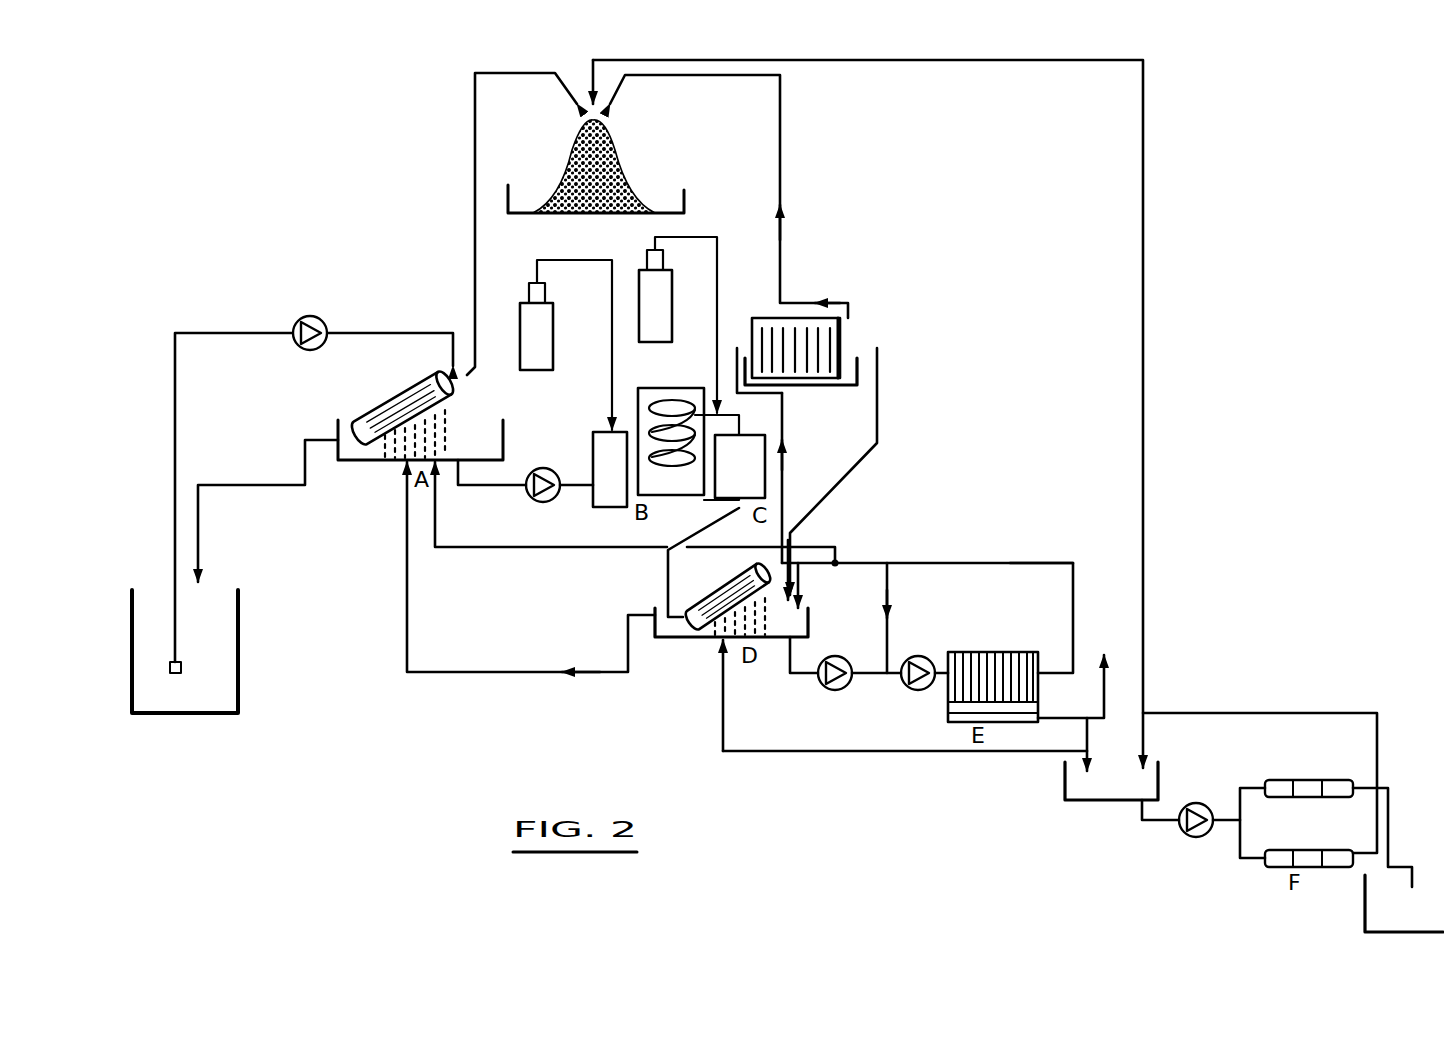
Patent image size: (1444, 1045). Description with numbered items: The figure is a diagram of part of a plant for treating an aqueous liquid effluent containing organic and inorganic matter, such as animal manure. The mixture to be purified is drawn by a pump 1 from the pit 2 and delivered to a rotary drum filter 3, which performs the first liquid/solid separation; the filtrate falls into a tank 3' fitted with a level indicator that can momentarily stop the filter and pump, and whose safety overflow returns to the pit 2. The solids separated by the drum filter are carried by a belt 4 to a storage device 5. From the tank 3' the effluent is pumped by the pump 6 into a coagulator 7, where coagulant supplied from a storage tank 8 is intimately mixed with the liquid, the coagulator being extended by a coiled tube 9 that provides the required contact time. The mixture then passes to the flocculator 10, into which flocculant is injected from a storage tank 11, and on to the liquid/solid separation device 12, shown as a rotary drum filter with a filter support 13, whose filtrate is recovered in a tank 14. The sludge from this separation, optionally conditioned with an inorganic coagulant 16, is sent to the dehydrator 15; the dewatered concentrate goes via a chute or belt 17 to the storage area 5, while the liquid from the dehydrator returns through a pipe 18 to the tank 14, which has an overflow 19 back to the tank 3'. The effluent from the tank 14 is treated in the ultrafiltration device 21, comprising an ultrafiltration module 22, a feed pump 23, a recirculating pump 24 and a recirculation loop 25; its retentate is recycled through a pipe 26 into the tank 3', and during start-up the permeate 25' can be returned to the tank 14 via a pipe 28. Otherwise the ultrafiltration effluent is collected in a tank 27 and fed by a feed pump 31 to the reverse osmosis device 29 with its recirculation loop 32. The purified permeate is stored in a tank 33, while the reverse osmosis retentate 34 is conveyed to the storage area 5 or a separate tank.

The pump 1 is at (312, 316).
The pit 2 is at (197, 687).
The rotary drum filter 3 is at (400, 413).
The tank 3' is at (436, 437).
The belt 4 is at (475, 178).
The storage device 5 is at (665, 210).
The pump 6 is at (543, 503).
The coagulator 7 is at (607, 507).
The storage tank 8 is at (546, 355).
The coiled tube 9 is at (660, 466).
The flocculator 10 is at (755, 473).
The storage tank 11 is at (662, 318).
The liquid/solid separation device 12 is at (696, 342).
The filter support 13 is at (698, 636).
The tank 14 is at (770, 667).
The dehydrator 15 is at (842, 332).
The inorganic coagulant 16 is at (786, 422).
The chute or belt 17 is at (782, 150).
The pipe 18 is at (847, 480).
The overflow 19 is at (527, 672).
The ultrafiltration device 21 is at (923, 550).
The ultrafiltration module 22 is at (982, 663).
The feed pump 23 is at (836, 656).
The recirculating pump 24 is at (918, 656).
The recirculation loop 25 is at (1041, 532).
The effluent (permeate) 25' is at (1071, 713).
The pipe 26 is at (470, 547).
The tank 27 is at (1108, 800).
The pipe 28 is at (765, 751).
The reverse osmosis device 29 is at (1323, 771).
The feed pump 31 is at (1197, 803).
The recirculation loop 32 is at (1337, 713).
The tank 33 is at (1365, 903).
The retentate 34 is at (1143, 595).